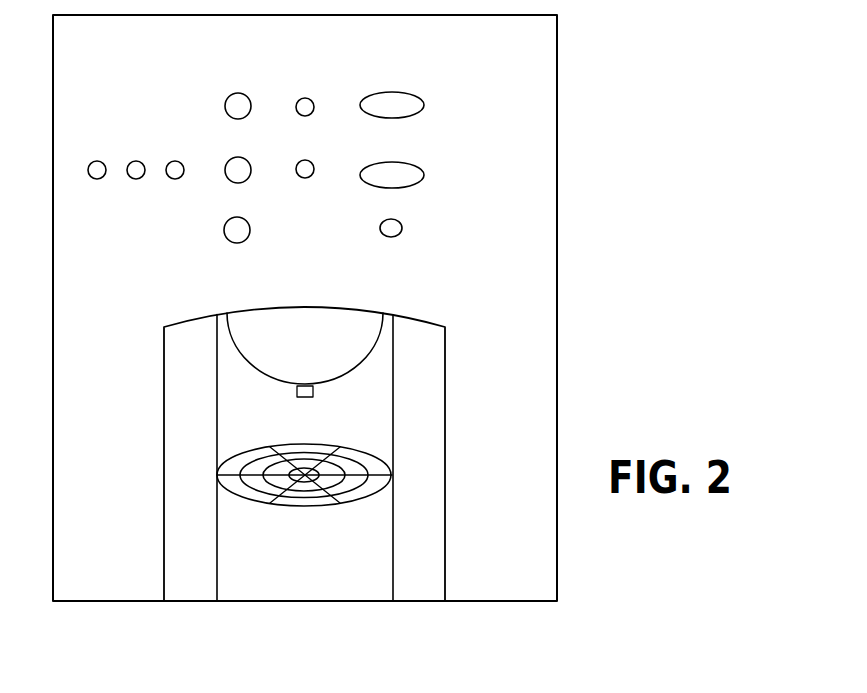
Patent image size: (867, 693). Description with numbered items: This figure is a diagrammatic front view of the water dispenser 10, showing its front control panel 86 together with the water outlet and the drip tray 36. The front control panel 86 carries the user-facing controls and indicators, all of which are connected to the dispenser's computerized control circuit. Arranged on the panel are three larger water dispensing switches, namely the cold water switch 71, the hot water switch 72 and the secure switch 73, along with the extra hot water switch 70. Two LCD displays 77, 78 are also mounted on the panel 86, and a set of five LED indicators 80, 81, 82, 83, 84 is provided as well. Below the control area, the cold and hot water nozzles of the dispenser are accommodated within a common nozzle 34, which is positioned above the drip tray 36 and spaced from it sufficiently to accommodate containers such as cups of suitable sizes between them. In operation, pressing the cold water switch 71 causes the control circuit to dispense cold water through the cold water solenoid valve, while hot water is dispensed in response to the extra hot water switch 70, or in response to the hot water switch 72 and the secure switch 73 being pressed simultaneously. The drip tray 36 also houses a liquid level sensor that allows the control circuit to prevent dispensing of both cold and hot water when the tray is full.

The water dispenser 10 is at (623, 313).
The common nozzle 34 is at (310, 395).
The drip tray 36 is at (375, 555).
The extra hot water switch 70 is at (392, 237).
The cold water switch 71 is at (252, 100).
The hot water switch 72 is at (235, 182).
The secure switch 73 is at (232, 242).
The LCD display 77 is at (417, 95).
The LCD display 78 is at (423, 167).
The LED indicator 80 is at (95, 158).
The LED indicator 81 is at (136, 158).
The LED indicator 82 is at (175, 158).
The LED indicator 83 is at (313, 102).
The LED indicator 84 is at (313, 165).
The front control panel 86 is at (548, 107).